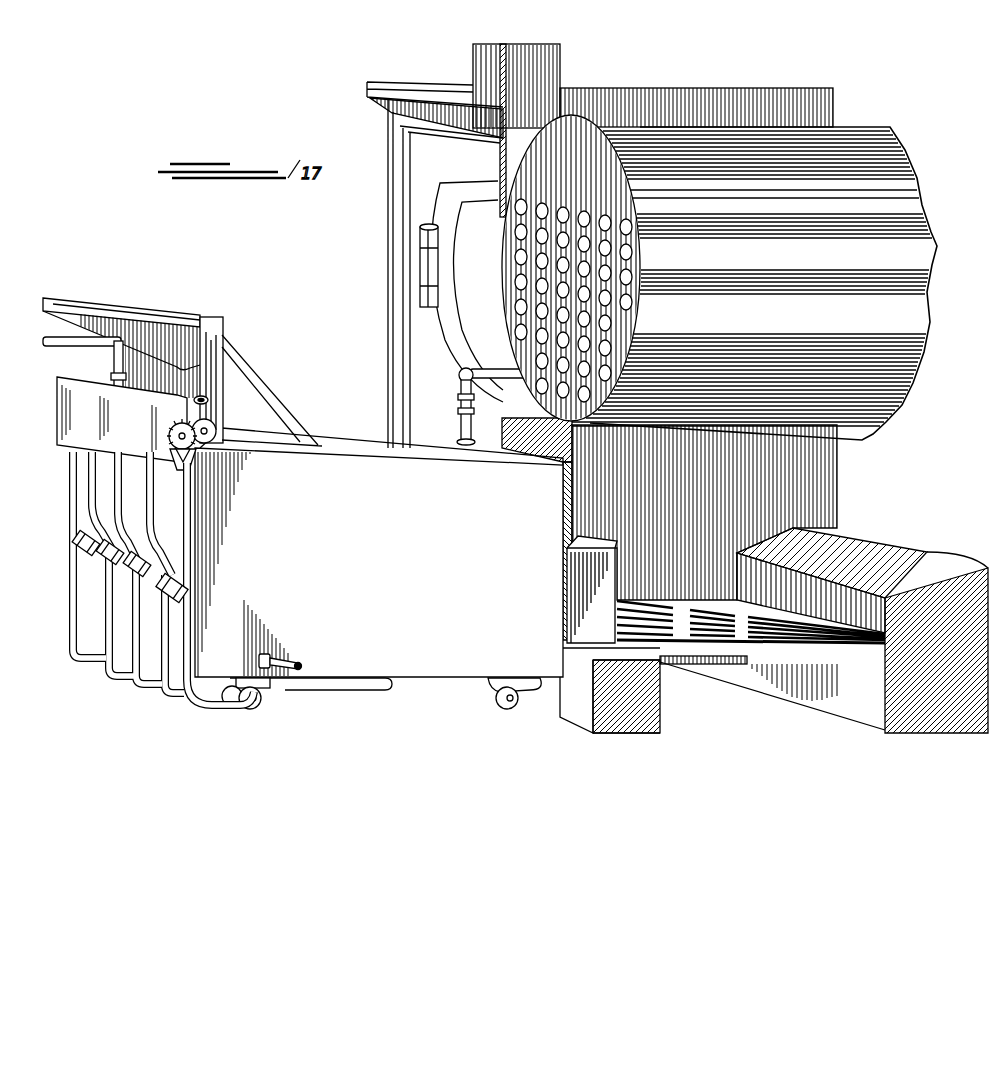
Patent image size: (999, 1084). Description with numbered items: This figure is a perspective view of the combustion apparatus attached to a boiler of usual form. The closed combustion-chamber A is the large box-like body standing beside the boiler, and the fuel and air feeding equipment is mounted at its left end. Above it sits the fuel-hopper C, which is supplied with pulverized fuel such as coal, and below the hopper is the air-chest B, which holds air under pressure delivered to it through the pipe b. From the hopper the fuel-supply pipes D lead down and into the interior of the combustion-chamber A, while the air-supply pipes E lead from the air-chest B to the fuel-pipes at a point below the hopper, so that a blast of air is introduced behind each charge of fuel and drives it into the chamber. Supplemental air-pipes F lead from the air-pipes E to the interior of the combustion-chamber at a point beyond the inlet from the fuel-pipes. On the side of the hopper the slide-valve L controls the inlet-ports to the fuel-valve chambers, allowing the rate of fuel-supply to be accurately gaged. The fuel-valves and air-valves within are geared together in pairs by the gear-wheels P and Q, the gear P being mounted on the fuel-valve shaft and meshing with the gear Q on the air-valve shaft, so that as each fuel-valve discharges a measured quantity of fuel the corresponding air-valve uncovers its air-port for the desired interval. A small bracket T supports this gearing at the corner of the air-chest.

The combustion-chamber A is at (379, 552).
The air-chest B is at (122, 420).
The pipe b is at (46, 352).
The fuel-hopper C is at (204, 334).
The fuel-supply pipes D is at (135, 636).
The air-supply pipes E is at (112, 550).
The supplemental air-pipes F is at (341, 690).
The slide-valve L is at (205, 398).
The gear-wheel P is at (208, 430).
The gear-wheel Q is at (170, 438).
The bracket T is at (176, 458).